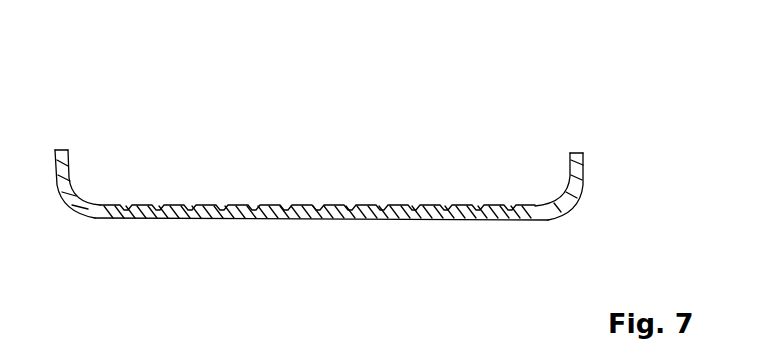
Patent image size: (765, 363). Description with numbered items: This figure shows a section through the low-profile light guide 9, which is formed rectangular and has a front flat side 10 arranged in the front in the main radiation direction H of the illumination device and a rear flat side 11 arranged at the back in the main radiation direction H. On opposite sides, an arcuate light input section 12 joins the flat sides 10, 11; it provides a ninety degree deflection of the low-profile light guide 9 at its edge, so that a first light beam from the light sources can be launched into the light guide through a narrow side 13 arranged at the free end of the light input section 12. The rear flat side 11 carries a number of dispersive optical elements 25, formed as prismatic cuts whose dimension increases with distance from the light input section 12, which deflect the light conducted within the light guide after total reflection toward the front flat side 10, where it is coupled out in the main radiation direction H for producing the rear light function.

The low-profile light guide 9 is at (325, 227).
The front flat side 10 is at (325, 194).
The rear flat side 11 is at (402, 220).
The light input section 12 is at (68, 202).
The narrow side 13 is at (60, 148).
The dispersive optical elements 25 is at (165, 205).
The main radiation direction H is at (193, 253).